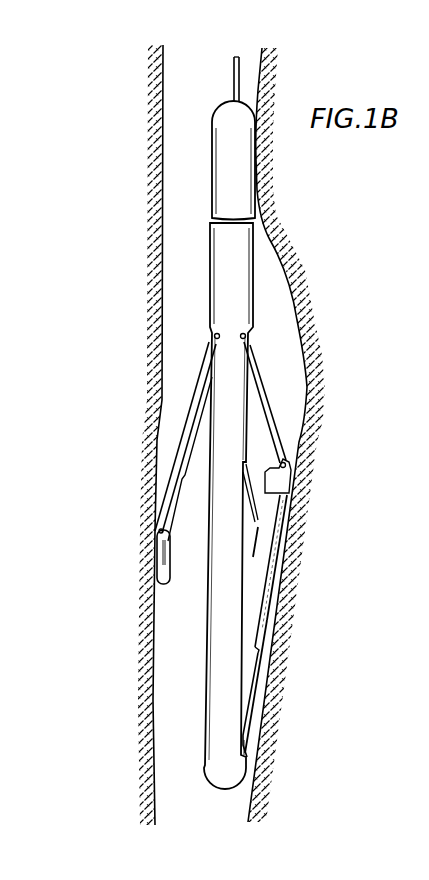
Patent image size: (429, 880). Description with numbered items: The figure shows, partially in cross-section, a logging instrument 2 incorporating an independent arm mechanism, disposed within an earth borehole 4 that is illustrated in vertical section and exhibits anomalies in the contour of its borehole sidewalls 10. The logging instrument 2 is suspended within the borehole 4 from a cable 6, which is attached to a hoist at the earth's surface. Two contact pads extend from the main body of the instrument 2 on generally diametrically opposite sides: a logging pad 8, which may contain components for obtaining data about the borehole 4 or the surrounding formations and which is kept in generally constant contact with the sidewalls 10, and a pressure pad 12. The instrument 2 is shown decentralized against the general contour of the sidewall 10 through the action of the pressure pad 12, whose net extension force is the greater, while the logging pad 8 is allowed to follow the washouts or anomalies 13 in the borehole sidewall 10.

The logging instrument 2 is at (212, 182).
The earth borehole 4 is at (175, 117).
The cable 6 is at (238, 78).
The logging pad 8 is at (266, 566).
The borehole sidewalls 10 is at (268, 685).
The pressure pad 12 is at (162, 548).
The washouts or anomalies 13 is at (300, 417).